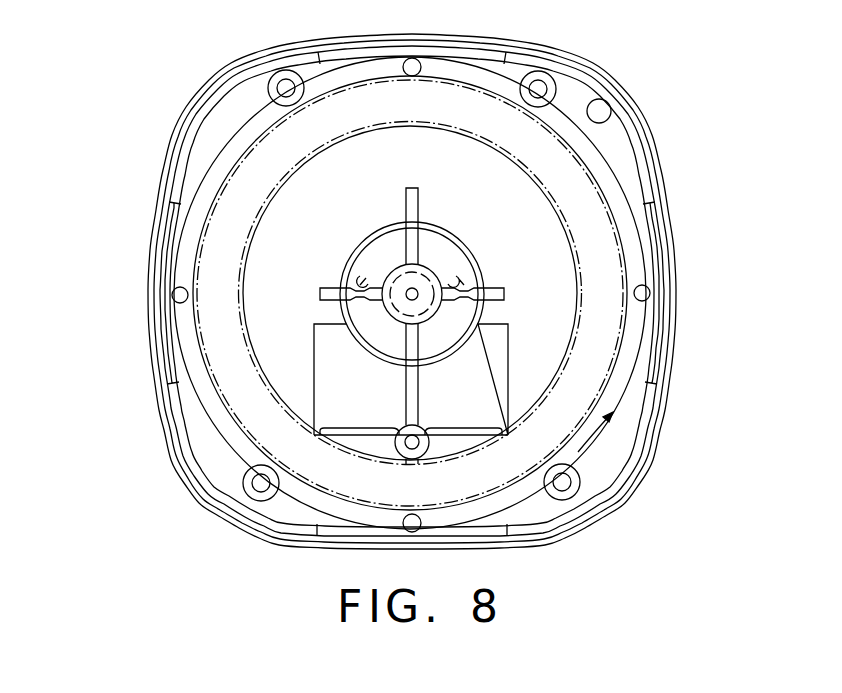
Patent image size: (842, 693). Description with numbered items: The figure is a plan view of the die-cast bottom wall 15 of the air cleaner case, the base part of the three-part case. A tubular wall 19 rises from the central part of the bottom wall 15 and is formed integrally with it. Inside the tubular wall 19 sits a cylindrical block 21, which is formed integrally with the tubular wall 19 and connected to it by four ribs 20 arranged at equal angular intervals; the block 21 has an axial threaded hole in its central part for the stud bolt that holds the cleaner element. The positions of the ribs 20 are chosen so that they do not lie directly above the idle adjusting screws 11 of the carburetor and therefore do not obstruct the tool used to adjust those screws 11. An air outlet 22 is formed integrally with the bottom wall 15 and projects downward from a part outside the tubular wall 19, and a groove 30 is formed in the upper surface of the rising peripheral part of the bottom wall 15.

The bottom wall 15 is at (176, 103).
The groove 30 is at (338, 50).
The tubular wall 19 is at (370, 234).
The idle adjusting screw 11 is at (352, 260).
The ribs 20 is at (417, 252).
The cylindrical block 21 is at (430, 317).
The air outlet 22 is at (465, 439).